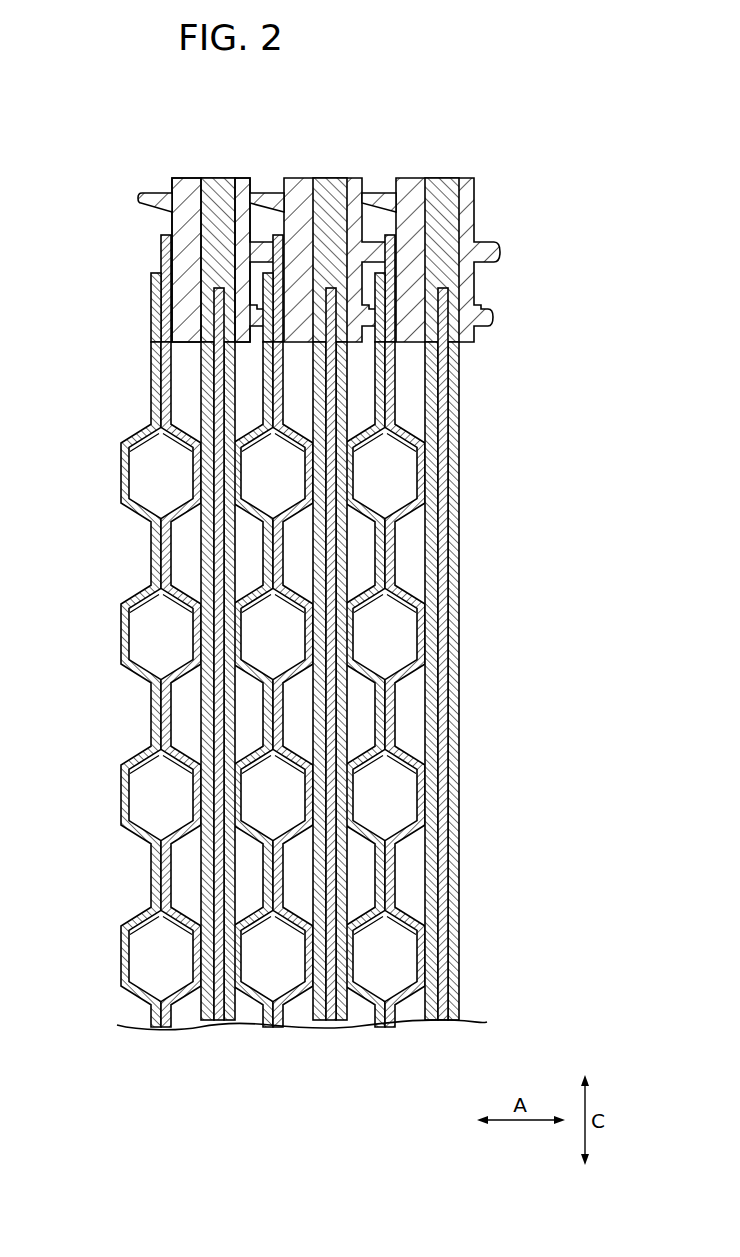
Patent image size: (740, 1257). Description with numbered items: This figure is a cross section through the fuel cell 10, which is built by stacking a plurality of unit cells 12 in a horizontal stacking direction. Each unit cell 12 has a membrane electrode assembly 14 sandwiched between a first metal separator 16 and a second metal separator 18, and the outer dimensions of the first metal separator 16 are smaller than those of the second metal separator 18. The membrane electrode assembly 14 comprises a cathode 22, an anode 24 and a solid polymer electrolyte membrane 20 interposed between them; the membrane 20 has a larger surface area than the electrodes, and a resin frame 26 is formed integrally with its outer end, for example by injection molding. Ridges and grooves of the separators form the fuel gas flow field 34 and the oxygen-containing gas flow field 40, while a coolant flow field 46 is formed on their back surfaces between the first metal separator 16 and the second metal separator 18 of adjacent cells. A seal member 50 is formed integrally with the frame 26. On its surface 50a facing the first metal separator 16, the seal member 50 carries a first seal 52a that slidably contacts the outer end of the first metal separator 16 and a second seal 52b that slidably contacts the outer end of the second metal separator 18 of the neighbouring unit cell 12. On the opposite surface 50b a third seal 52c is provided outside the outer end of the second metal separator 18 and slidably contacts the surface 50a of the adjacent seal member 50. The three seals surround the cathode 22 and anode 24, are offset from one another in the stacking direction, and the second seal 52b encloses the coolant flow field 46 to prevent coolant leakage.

The fuel cell 10 is at (440, 123).
The unit cell 12 is at (238, 657).
The membrane electrode assembly 14 is at (238, 654).
The first metal separator 16 is at (243, 912).
The second metal separator 18 is at (178, 830).
The solid polymer electrolyte membrane 20 is at (217, 420).
The cathode 22 is at (202, 370).
The anode 24 is at (217, 455).
The resin frame 26 is at (214, 255).
The fuel gas flow field 34 is at (250, 555).
The oxygen-containing gas flow field 40 is at (183, 552).
The coolant flow field 46 is at (267, 637).
The seal member 50 is at (304, 216).
The surface of the seal member on the first metal separator side 50a is at (243, 183).
The surface of the seal member on the second metal separator side 50b is at (181, 178).
The first seal 52a is at (260, 318).
The second seal 52b is at (259, 250).
The third seal 52c is at (156, 201).